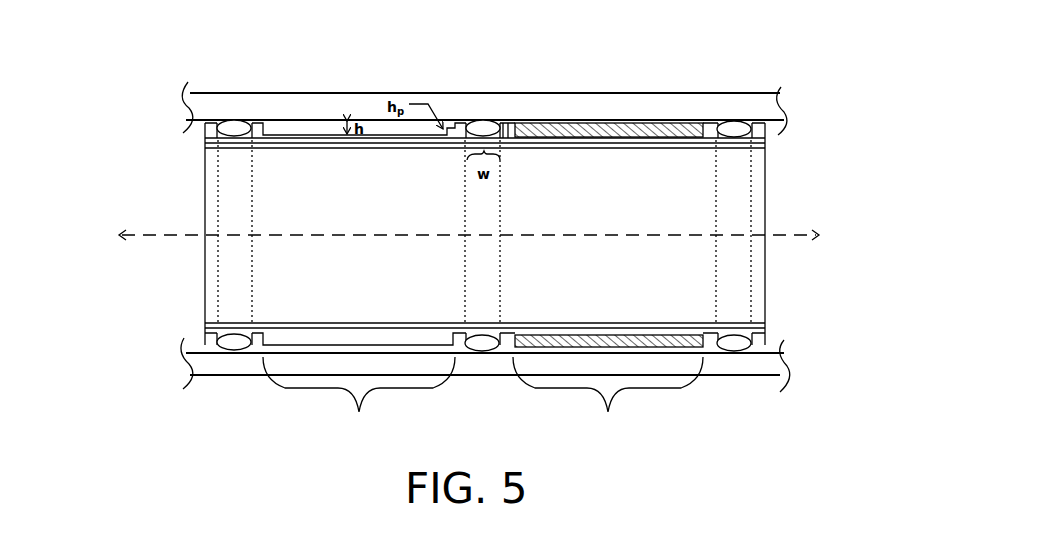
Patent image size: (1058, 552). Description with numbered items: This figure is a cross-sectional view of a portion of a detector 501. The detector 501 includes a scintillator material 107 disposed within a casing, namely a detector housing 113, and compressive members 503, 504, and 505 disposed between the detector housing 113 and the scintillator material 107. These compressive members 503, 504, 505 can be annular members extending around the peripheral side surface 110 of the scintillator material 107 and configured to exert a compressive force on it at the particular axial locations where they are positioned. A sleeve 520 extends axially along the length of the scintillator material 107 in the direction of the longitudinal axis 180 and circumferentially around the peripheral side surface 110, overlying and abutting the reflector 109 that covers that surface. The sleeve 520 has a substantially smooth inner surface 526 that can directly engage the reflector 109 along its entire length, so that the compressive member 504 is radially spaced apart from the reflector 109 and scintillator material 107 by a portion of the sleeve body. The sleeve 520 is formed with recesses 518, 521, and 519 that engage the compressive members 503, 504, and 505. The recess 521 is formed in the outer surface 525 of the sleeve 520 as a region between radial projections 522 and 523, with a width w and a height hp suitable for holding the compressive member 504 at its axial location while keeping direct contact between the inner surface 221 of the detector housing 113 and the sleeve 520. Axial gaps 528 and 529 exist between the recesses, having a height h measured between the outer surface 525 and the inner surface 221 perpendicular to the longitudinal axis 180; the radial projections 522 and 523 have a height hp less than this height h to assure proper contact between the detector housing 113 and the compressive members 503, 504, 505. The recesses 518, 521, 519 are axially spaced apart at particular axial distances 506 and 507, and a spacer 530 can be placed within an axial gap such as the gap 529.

The detector 501 is at (430, 219).
The detector housing 113 is at (220, 94).
The inner surface of the detector housing 221 is at (641, 353).
The scintillator material 107 is at (686, 198).
The reflector 109 is at (420, 146).
The peripheral side surface 110 is at (447, 149).
The sleeve 520 is at (385, 139).
The recess 518 is at (230, 130).
The recess 521 is at (484, 130).
The recess 519 is at (732, 130).
The compressive member 503 is at (242, 131).
The compressive member 504 is at (498, 131).
The compressive member 505 is at (742, 131).
The outer surface of the sleeve 525 is at (683, 130).
The spacer 530 is at (631, 130).
The radial projection 523 is at (506, 130).
The radial projection 522 is at (462, 130).
The inner surface of the sleeve 526 is at (602, 334).
The axial gap 529 is at (678, 344).
The axial gap 528 is at (297, 131).
The longitudinal axis 180 is at (795, 238).
The axial distance 506 is at (359, 401).
The axial distance 507 is at (608, 401).